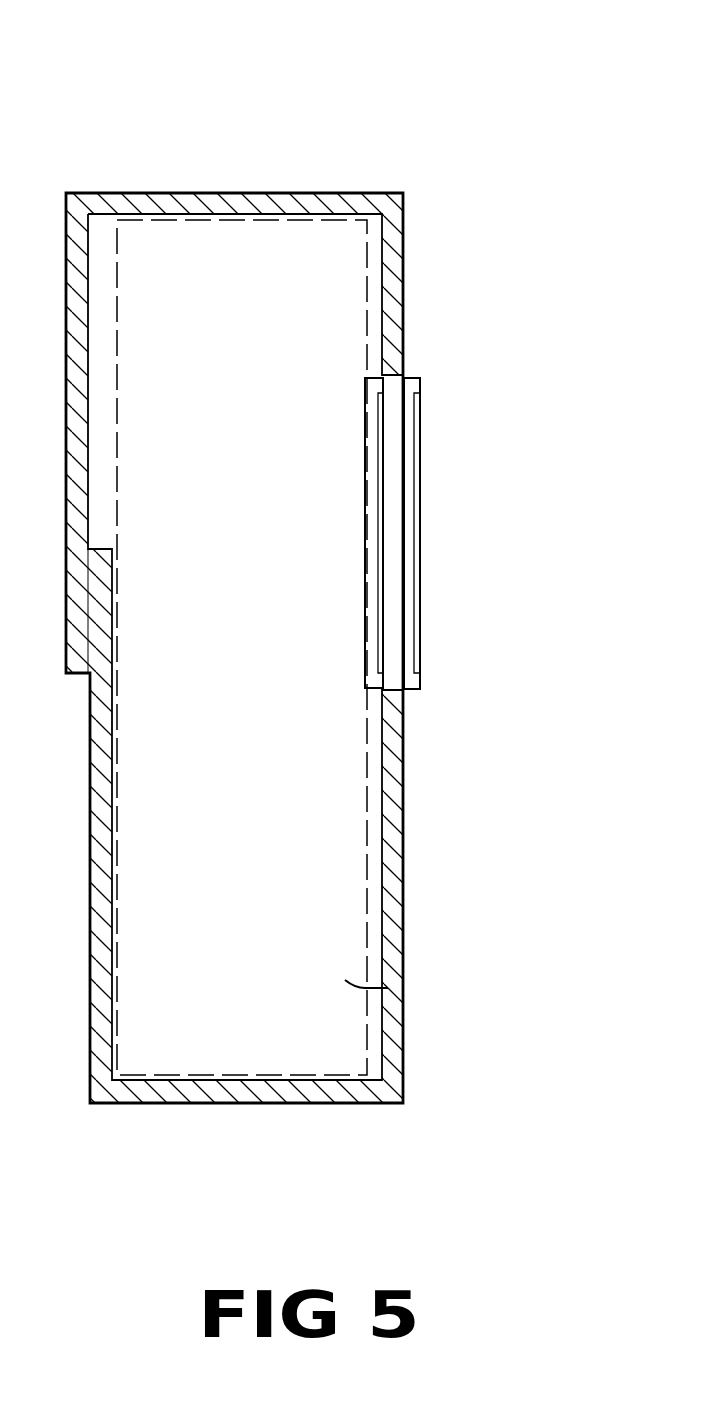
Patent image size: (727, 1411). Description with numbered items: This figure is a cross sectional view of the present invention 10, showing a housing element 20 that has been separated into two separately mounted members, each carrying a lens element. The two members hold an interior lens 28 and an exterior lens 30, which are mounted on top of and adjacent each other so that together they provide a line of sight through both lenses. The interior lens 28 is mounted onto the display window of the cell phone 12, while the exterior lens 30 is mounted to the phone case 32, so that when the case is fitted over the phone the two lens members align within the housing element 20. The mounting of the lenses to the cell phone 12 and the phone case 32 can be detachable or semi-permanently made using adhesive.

The present invention 10 is at (334, 551).
The cell phone 12 is at (407, 982).
The housing element 20 is at (475, 674).
The interior lens 28 is at (375, 370).
The exterior lens 30 is at (420, 495).
The phone case 32 is at (402, 860).